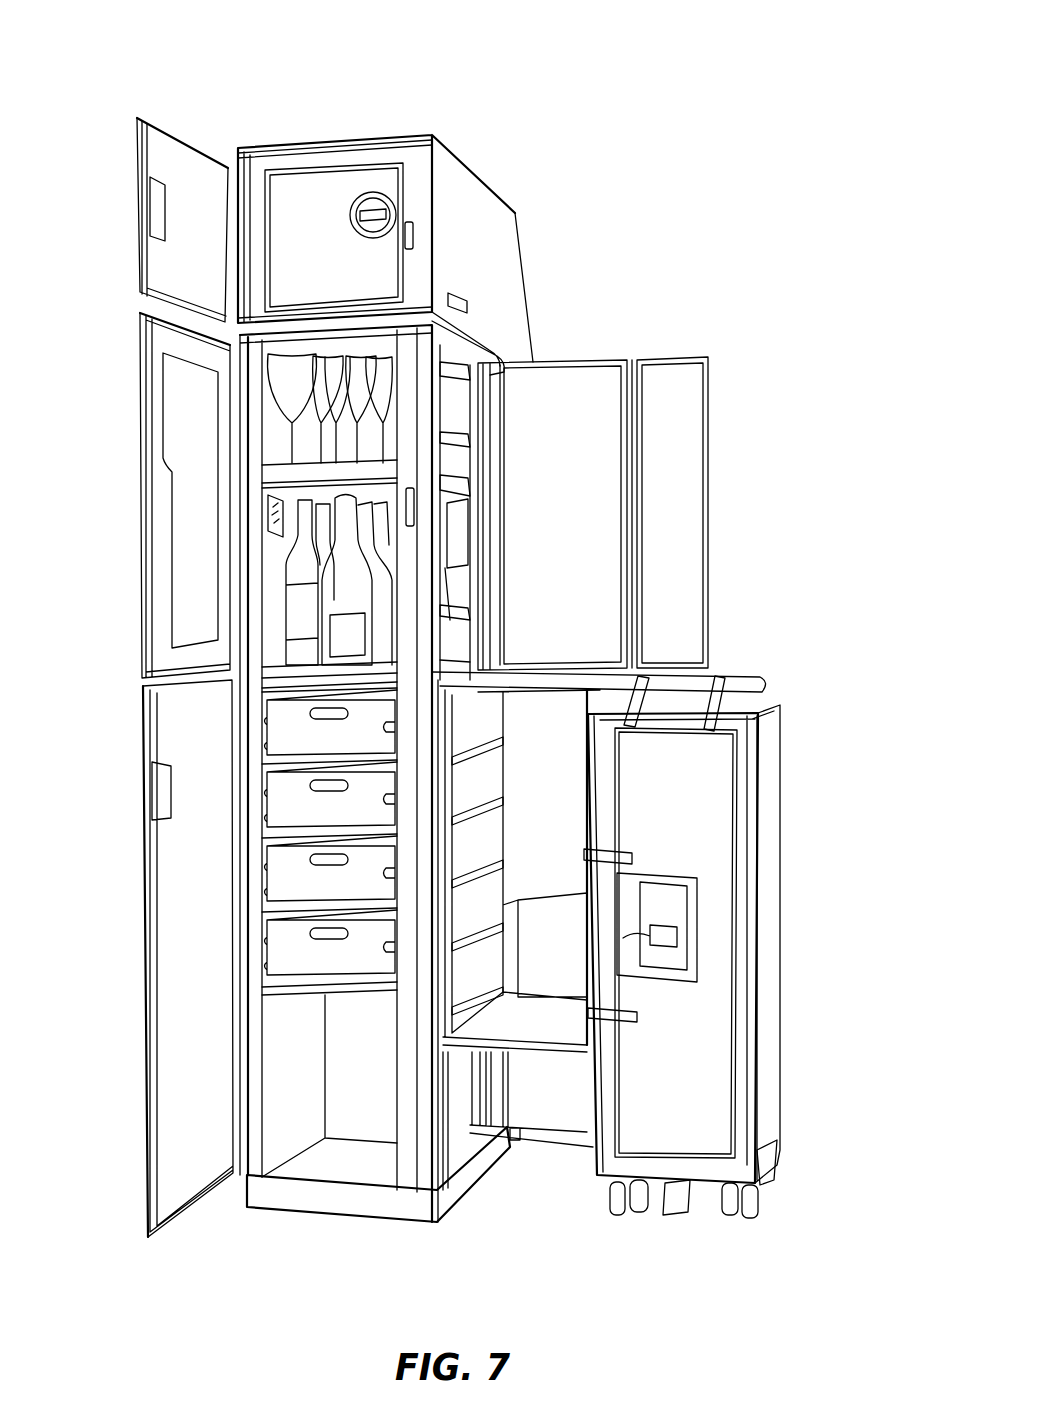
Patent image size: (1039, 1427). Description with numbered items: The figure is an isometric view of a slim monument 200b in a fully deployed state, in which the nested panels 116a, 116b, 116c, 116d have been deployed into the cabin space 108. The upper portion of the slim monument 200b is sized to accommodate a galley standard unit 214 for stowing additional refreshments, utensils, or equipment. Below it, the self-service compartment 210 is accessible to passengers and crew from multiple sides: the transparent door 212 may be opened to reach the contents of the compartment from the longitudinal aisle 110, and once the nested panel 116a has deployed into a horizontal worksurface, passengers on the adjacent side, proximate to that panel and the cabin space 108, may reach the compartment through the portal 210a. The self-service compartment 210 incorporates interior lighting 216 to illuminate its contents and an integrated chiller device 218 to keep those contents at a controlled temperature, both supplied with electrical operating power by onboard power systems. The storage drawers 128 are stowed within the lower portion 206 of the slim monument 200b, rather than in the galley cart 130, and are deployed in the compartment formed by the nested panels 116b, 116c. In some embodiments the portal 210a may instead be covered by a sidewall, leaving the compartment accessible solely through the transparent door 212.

The slim monument 200b is at (100, 66).
The galley standard unit 214 is at (343, 273).
The transparent door 212 is at (176, 381).
The interior lighting 216 is at (272, 512).
The self-service compartment 210 is at (262, 570).
The integrated chiller device 218 is at (452, 536).
The portal 210a is at (478, 582).
The nested panel 116a is at (720, 678).
The nested panel 116b is at (588, 842).
The nested panel 116d is at (627, 940).
The storage drawers 128 is at (295, 947).
The lower portion 206 is at (108, 1074).
The nested panel 116c is at (515, 1013).
The galley cart 130 is at (685, 1037).
The longitudinal aisle 110 is at (274, 1267).
The cabin space 108 is at (638, 1244).